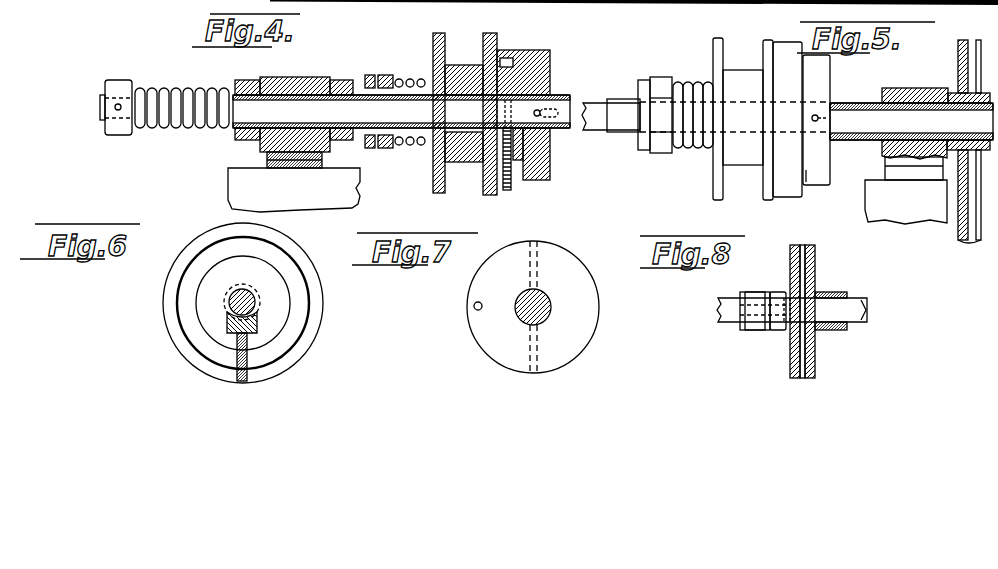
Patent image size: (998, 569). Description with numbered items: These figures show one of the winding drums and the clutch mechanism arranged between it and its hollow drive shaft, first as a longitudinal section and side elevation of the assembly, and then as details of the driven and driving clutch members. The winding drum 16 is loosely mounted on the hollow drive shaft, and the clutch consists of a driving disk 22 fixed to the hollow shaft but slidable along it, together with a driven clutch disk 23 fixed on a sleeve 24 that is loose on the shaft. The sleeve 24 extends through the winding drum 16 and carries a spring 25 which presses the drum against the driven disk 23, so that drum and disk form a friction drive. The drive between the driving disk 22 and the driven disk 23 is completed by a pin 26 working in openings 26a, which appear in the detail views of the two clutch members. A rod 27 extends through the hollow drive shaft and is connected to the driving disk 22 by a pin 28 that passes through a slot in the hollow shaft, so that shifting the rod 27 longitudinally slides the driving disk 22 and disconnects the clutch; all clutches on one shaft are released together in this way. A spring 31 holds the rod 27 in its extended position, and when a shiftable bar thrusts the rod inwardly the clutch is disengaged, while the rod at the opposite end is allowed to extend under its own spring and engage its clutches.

In FIG. 4, the forwardly driven winding drum 16 is at (460, 168).
In FIG. 5, the forwardly driven winding drum 16 is at (740, 63).
In FIG. 4, the driving disk 22 is at (550, 155).
In FIG. 5, the driving disk 22 is at (822, 157).
In FIG. 8, the driving disk 22 is at (790, 355).
In FIG. 4, the driven clutch disk 23 is at (503, 36).
In FIG. 5, the driven clutch disk 23 is at (780, 190).
In FIG. 6, the driven clutch disk 23 is at (290, 356).
In FIG. 4, the sleeve 24 is at (437, 145).
In FIG. 4, the spring 25 is at (409, 80).
In FIG. 4, the pin 26 is at (520, 168).
In FIG. 5, the pin 26 is at (803, 182).
In FIG. 7, the pin 26 is at (475, 309).
In FIG. 8, the pin 26 is at (783, 310).
In FIG. 4, the openings 26a is at (508, 62).
In FIG. 6, the openings 26a is at (297, 296).
In FIG. 4, the rod 27 is at (290, 110).
In FIG. 5, the rod 27 is at (833, 118).
In FIG. 6, the rod 27 is at (225, 305).
In FIG. 7, the rod 27 is at (545, 304).
In FIG. 8, the rod 27 is at (853, 317).
In FIG. 4, the pin 28 is at (540, 110).
In FIG. 5, the pin 28 is at (820, 112).
In FIG. 7, the pin 28 is at (540, 363).
In FIG. 8, the pin 28 is at (803, 262).
In FIG. 4, the spring 31 is at (163, 94).